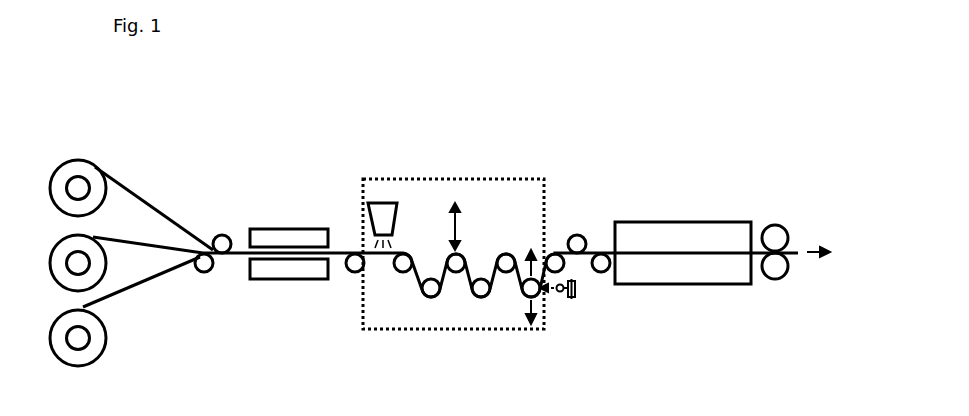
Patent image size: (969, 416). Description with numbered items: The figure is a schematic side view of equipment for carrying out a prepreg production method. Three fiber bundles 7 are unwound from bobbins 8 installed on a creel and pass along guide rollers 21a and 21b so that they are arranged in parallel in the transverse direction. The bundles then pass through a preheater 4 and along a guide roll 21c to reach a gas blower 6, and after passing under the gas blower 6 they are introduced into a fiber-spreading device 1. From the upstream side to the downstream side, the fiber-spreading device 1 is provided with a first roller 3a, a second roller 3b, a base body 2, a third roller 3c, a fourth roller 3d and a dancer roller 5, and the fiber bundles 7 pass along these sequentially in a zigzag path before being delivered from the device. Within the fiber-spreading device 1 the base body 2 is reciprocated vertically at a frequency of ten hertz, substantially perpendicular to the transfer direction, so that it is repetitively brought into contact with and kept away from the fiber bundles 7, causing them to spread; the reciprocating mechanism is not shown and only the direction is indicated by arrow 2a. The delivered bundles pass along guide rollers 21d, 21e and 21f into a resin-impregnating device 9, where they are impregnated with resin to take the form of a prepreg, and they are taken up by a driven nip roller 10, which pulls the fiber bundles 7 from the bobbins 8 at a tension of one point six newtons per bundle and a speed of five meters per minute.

The fiber-spreading device 1 is at (470, 178).
The base body 2 is at (456, 273).
The arrow 2a is at (460, 227).
The first roller 3a is at (399, 272).
The second roller 3b is at (430, 278).
The third roller 3c is at (481, 278).
The fourth roller 3d is at (506, 273).
The preheater 4 is at (302, 228).
The dancer roller 5 is at (538, 298).
The gas blower 6 is at (380, 202).
The fiber bundles 7 is at (240, 247).
The bobbins 8 is at (95, 167).
The resin-impregnating device 9 is at (657, 222).
The driven nip roller 10 is at (773, 225).
The guide roller 21a is at (197, 273).
The guide roller 21b is at (213, 237).
The guide roll 21c is at (350, 273).
The guide roller 21d is at (587, 311).
The guide roller 21e is at (579, 235).
The guide roller 21f is at (606, 272).